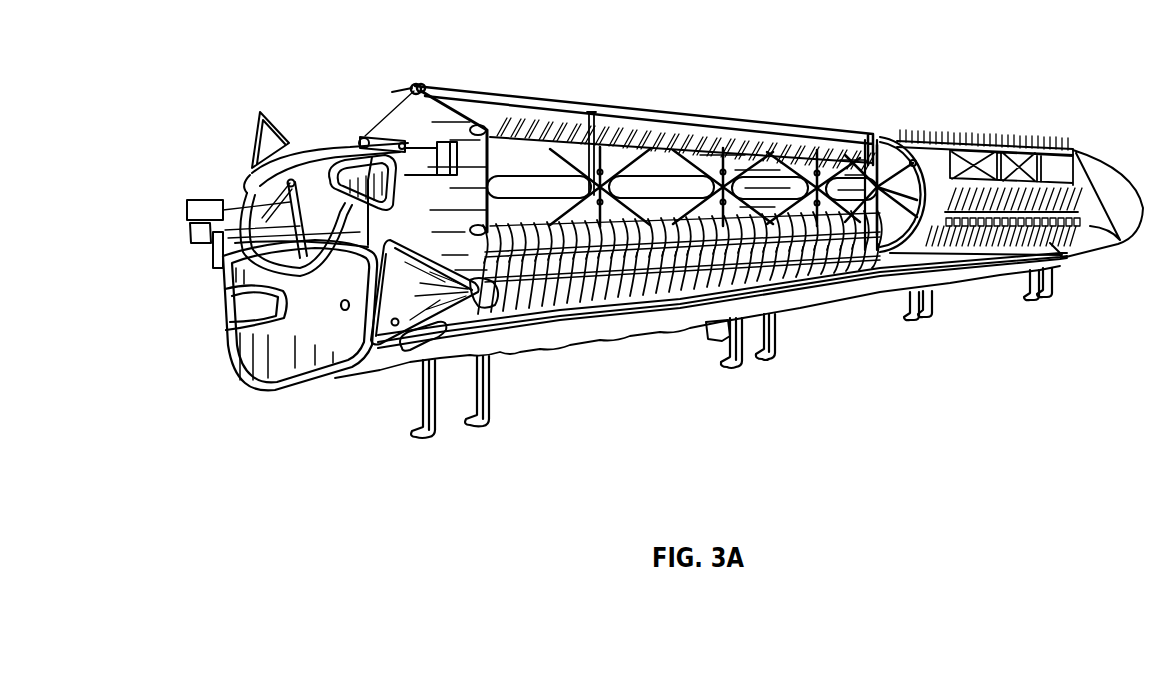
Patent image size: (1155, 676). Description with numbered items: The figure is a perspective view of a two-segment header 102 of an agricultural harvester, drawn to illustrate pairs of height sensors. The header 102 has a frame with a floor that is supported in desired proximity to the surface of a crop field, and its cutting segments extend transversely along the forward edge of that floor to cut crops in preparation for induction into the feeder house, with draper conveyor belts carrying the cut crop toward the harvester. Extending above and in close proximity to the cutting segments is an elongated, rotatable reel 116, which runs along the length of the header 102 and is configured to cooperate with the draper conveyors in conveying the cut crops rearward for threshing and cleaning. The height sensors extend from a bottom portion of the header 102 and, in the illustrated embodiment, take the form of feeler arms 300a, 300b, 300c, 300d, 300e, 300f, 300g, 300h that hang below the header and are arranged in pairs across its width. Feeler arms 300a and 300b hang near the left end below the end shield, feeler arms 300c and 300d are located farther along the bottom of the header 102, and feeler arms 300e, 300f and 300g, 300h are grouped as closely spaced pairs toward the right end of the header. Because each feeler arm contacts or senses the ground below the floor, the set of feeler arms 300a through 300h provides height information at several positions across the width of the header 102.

The header 102 is at (232, 287).
The rotatable reel 116 is at (596, 130).
The feeler arm 300a is at (425, 439).
The feeler arm 300b is at (484, 427).
The feeler arm 300c is at (735, 368).
The feeler arm 300d is at (769, 360).
The feeler arm 300e is at (914, 321).
The feeler arm 300f is at (928, 318).
The feeler arm 300g is at (1034, 301).
The feeler arm 300h is at (1048, 298).